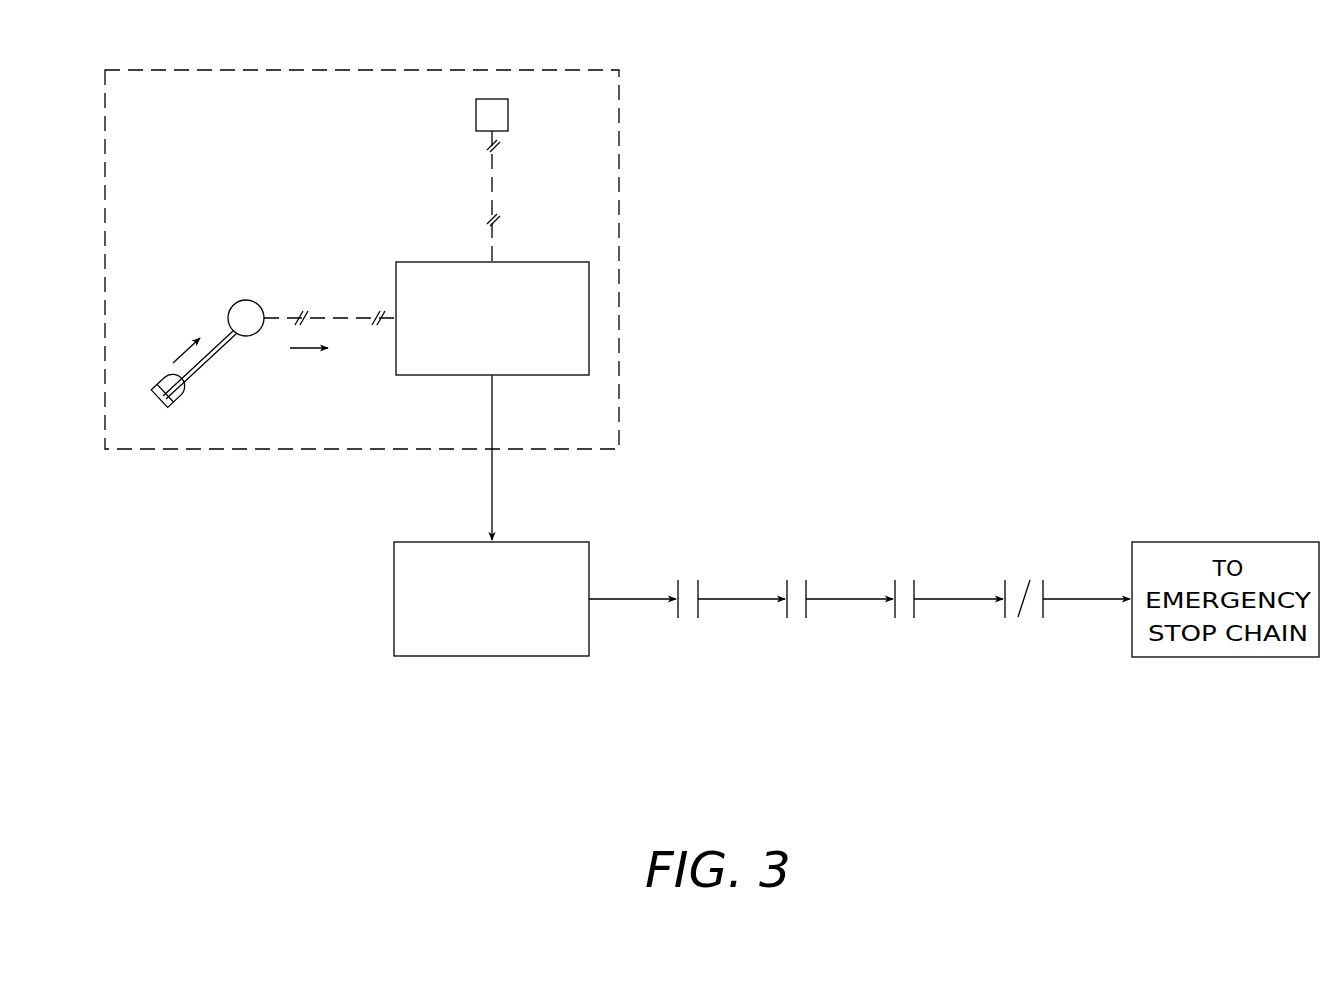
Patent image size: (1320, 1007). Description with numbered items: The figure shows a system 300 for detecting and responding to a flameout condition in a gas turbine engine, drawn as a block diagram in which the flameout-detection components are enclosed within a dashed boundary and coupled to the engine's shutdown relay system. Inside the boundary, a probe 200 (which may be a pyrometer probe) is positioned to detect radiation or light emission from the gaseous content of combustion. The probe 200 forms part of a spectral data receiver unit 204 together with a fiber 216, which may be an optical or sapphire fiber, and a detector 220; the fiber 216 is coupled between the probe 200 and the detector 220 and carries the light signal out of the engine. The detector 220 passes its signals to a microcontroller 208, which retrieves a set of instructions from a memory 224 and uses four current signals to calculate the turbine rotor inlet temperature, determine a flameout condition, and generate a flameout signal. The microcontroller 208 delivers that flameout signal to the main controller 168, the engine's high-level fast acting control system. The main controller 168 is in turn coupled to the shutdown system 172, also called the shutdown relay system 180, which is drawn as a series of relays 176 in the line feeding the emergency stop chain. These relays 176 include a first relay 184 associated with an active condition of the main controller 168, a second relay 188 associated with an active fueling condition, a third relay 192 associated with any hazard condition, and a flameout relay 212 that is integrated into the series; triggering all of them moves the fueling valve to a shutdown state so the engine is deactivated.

The system 300 is at (158, 69).
The memory 224 is at (508, 116).
The microcontroller 208 is at (396, 278).
The spectral data receiver unit 204 is at (242, 366).
The detector 220 is at (260, 306).
The fiber 216 is at (188, 374).
The probe 200 is at (141, 418).
The main controller 168 is at (394, 560).
The shutdown system 172 is at (859, 589).
The shutdown relay system 180 is at (859, 624).
The relays 176 is at (1022, 633).
The first relay 184 is at (690, 571).
The second relay 188 is at (799, 571).
The third relay 192 is at (907, 571).
The flameout relay 212 is at (1028, 569).